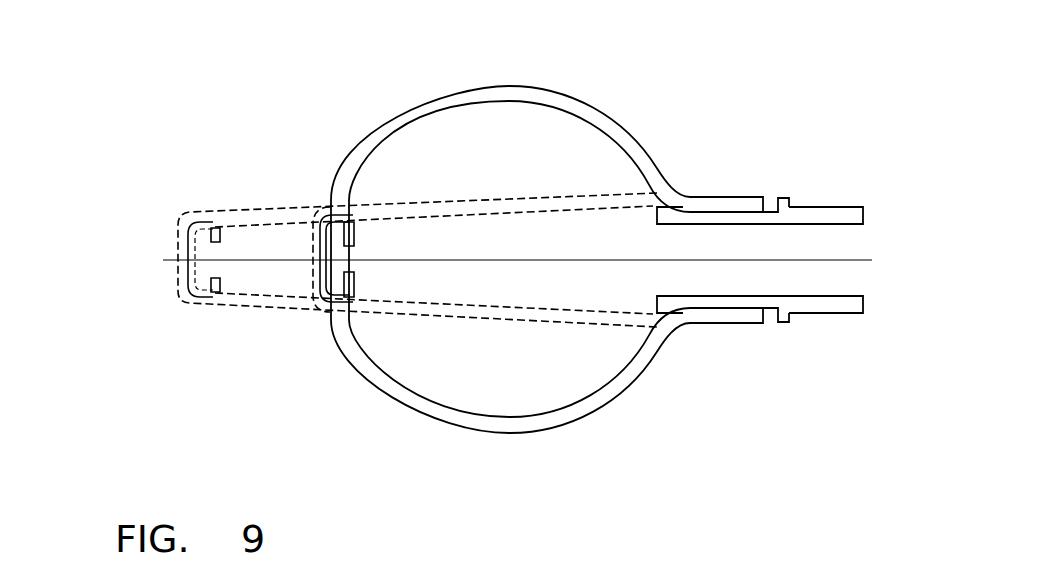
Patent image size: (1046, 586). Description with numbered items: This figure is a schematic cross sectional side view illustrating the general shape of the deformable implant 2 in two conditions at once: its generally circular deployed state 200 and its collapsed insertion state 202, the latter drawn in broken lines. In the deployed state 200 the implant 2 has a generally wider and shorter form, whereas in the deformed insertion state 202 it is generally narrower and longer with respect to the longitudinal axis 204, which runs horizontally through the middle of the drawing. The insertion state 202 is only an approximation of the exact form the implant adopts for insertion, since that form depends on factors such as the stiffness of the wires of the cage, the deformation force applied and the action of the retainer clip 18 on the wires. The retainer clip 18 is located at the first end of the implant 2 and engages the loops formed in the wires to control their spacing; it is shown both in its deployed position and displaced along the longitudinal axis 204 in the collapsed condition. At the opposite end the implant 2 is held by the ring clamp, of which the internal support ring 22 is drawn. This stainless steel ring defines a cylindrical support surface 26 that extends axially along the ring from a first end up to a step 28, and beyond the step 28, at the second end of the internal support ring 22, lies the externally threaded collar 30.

The deformable implant 2 is at (200, 99).
The retainer clip 18 is at (176, 245).
The internal support ring 22 is at (787, 234).
The cylindrical support surface 26 is at (724, 230).
The step 28 is at (771, 182).
The externally threaded collar 30 is at (848, 195).
The deployed state 200 is at (592, 102).
The insertion state 202 is at (269, 297).
The longitudinal axis 204 is at (537, 260).